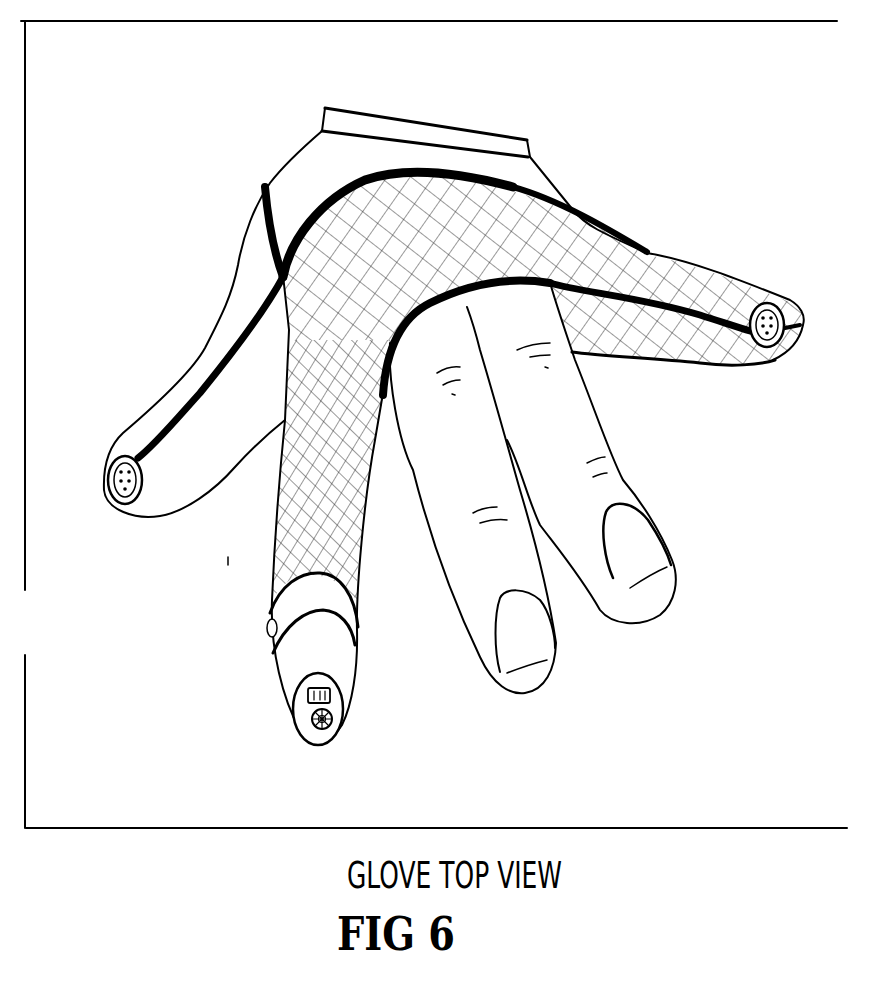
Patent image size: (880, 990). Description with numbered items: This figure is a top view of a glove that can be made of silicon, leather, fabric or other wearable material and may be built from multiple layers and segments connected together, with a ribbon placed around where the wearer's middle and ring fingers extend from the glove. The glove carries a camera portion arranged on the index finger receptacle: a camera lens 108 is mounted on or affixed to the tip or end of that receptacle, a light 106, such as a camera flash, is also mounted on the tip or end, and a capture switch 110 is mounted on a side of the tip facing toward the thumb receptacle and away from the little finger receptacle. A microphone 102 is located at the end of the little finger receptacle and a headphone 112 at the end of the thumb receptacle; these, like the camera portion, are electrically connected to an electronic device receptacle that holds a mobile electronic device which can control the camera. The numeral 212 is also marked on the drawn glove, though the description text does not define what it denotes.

The elastic strap 212 is at (517, 270).
The microphone 102 is at (766, 302).
The headphone 112 is at (112, 474).
The capture switch 110 is at (266, 620).
The light 106 is at (305, 693).
The camera lens 108 is at (312, 723).